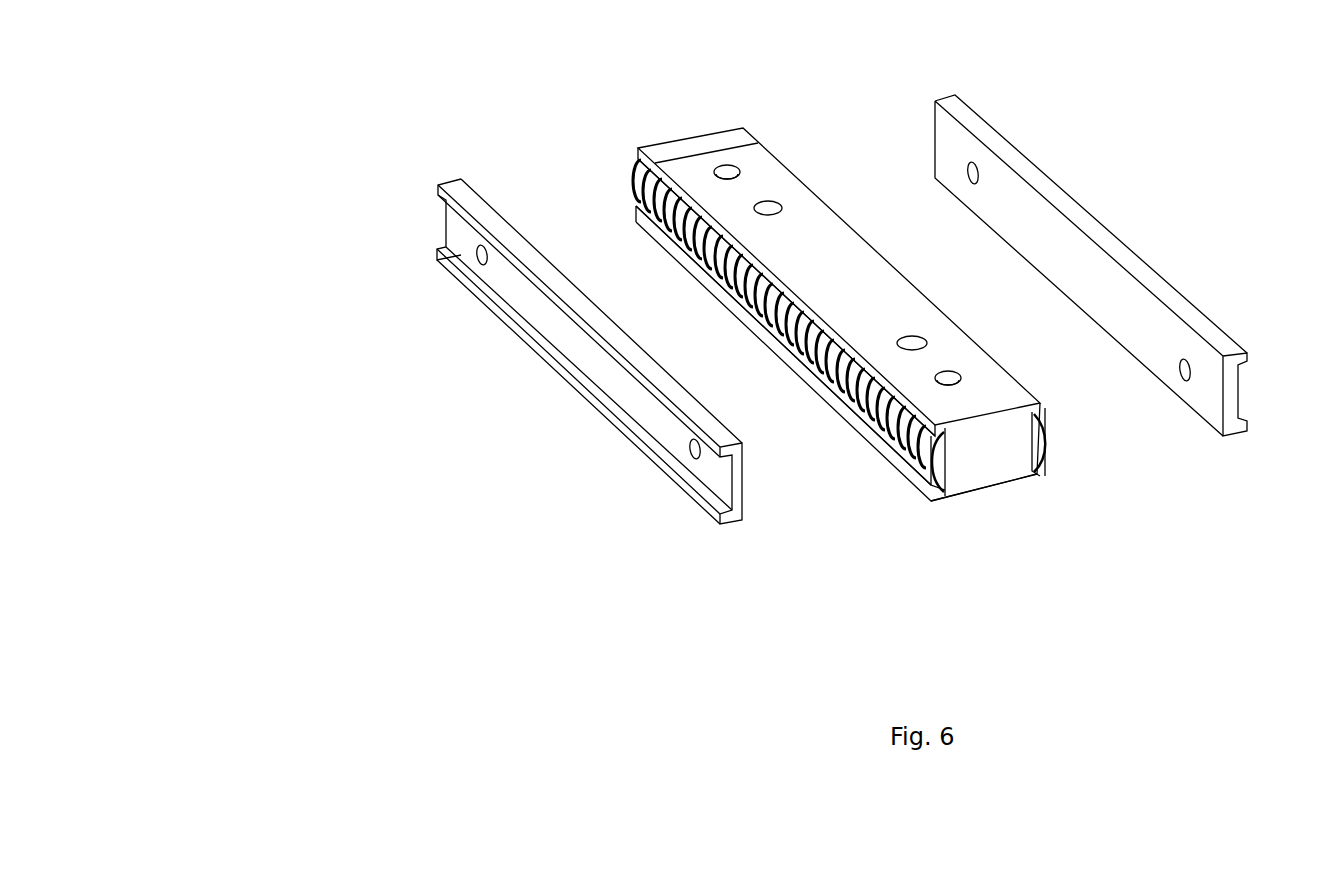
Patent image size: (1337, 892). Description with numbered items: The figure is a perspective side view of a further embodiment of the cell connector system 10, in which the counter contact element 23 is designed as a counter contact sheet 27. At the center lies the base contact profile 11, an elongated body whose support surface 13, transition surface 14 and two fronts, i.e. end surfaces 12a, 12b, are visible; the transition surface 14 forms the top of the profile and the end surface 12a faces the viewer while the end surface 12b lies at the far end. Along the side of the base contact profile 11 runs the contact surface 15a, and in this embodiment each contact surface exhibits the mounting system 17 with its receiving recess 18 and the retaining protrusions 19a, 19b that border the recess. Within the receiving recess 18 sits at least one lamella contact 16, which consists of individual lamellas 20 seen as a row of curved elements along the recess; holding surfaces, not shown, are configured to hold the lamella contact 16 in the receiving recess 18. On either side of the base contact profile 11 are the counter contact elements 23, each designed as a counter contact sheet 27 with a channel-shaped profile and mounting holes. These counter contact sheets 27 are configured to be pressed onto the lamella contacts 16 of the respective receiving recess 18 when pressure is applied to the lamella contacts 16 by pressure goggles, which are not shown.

The cell connector system 10 is at (378, 205).
The base contact profile 11 is at (821, 188).
The end surface 12a is at (1000, 458).
The end surface 12b is at (682, 133).
The support surface 13 is at (1023, 496).
The transition surface 14 is at (881, 313).
The contact surface 15a is at (938, 508).
The lamella contact 16 is at (893, 316).
The mounting system 17 is at (938, 508).
The receiving recess 18 is at (1019, 451).
The retaining protrusion 19a is at (640, 150).
The retaining protrusion 19b is at (636, 218).
The lamella 20 is at (673, 258).
The counter contact element 23 is at (851, 309).
The counter contact sheet 27 is at (605, 368).